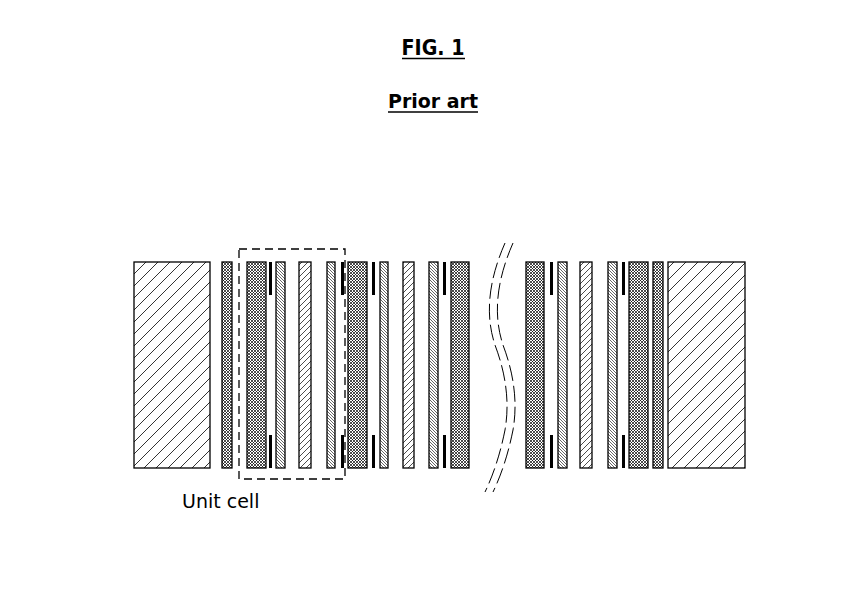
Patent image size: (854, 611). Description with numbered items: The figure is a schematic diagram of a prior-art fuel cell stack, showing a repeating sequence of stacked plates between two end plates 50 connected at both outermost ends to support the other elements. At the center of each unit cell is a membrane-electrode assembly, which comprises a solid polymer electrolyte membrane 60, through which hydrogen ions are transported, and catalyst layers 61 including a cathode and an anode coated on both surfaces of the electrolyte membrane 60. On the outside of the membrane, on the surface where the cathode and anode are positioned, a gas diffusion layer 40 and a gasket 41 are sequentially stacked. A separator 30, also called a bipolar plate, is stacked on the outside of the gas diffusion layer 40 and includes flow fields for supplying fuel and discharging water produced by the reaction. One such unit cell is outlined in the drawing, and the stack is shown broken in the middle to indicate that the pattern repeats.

The separator 30 is at (257, 273).
The gas diffusion layer 40 is at (282, 268).
The gasket 41 is at (343, 268).
The end plate 50 is at (142, 363).
The solid polymer electrolyte membrane 60 is at (305, 270).
The catalyst layers 61 is at (311, 466).